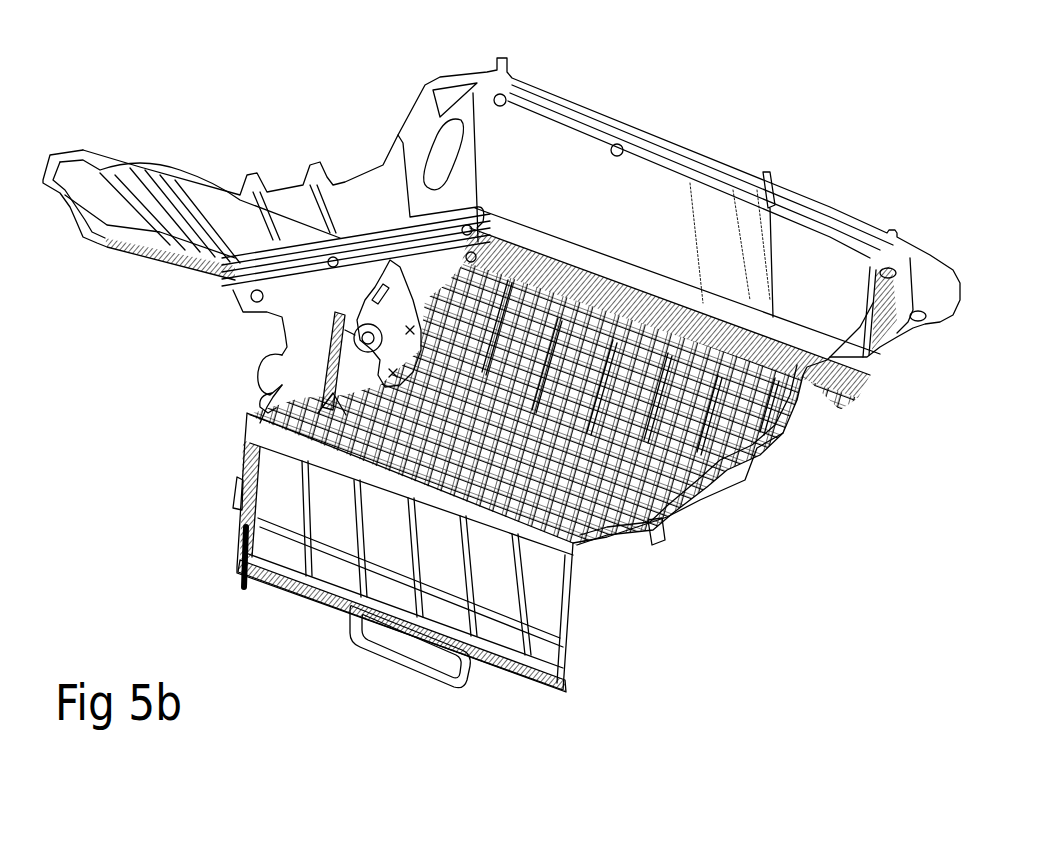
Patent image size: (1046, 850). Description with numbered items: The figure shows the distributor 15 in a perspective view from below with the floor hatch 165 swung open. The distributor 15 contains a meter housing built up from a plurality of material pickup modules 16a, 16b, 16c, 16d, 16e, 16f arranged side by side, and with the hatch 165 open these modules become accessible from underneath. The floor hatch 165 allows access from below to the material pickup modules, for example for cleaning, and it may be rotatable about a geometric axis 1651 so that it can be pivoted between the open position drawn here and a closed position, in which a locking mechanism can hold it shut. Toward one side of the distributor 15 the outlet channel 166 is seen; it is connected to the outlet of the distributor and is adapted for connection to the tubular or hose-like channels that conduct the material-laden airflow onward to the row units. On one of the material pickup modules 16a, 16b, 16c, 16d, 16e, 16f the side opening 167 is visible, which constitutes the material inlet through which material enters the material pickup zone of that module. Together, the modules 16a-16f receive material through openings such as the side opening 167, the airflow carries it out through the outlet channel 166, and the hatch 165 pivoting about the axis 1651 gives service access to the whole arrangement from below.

The distributor 15 is at (112, 170).
The material pickup module 16a is at (508, 278).
The material pickup module 16b is at (558, 315).
The material pickup module 16c is at (613, 337).
The material pickup module 16d is at (668, 350).
The material pickup module 16e is at (718, 372).
The material pickup module 16f is at (775, 375).
The floor hatch 165 is at (542, 623).
The outlet channel 166 is at (257, 383).
The geometric axis 1651 is at (263, 398).
The side opening 167 is at (637, 505).